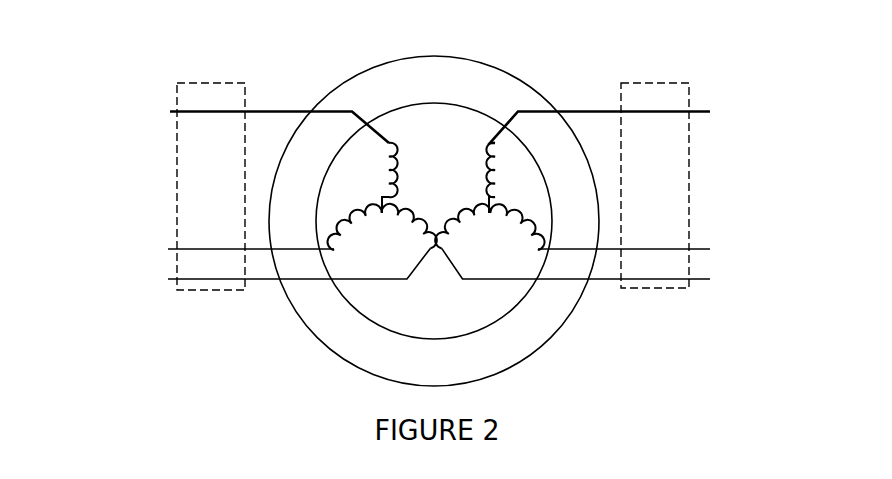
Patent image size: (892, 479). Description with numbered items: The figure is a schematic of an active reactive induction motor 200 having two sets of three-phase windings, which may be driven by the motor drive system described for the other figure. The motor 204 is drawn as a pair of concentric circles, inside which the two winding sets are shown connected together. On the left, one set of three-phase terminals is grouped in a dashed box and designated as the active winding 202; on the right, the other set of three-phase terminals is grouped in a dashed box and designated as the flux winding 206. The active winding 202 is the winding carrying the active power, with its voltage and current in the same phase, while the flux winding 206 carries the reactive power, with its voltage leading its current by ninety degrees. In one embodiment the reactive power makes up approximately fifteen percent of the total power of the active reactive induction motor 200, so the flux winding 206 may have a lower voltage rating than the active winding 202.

The active reactive induction motor 200 is at (143, 140).
The active winding 202 is at (176, 181).
The motor 204 is at (513, 75).
The flux winding 206 is at (689, 199).